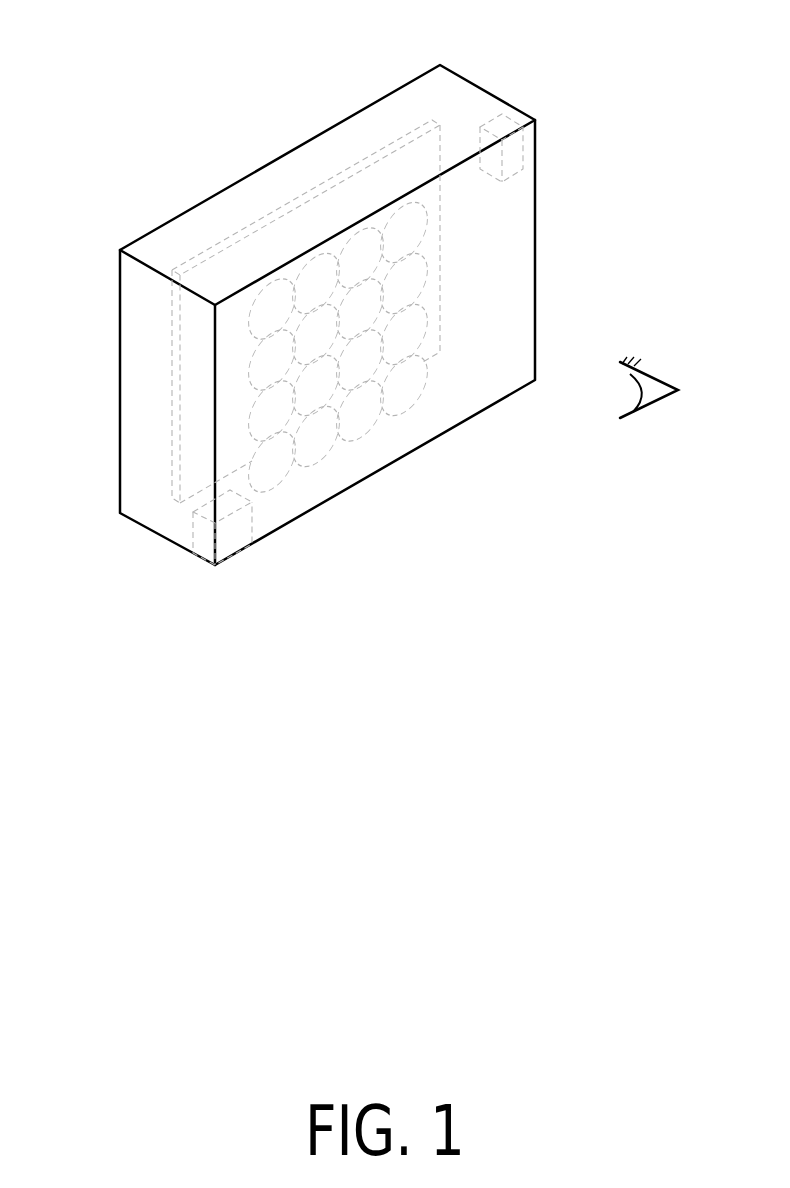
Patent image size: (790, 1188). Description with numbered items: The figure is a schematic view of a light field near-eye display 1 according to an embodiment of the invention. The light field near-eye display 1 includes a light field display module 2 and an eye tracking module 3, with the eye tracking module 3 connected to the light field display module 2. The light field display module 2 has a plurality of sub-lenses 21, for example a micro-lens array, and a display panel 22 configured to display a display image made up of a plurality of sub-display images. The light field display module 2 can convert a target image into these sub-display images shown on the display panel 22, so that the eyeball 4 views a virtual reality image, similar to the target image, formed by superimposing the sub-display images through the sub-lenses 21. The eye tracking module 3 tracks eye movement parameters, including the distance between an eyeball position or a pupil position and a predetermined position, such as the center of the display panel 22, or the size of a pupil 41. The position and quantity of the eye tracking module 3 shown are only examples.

The light field near-eye display 1 is at (82, 33).
The light field display module 2 is at (358, 133).
The sub-lenses 21 is at (276, 466).
The display panel 22 is at (297, 197).
The eye tracking module 3 is at (512, 151).
The eyeball 4 is at (635, 404).
The pupil 41 is at (631, 392).